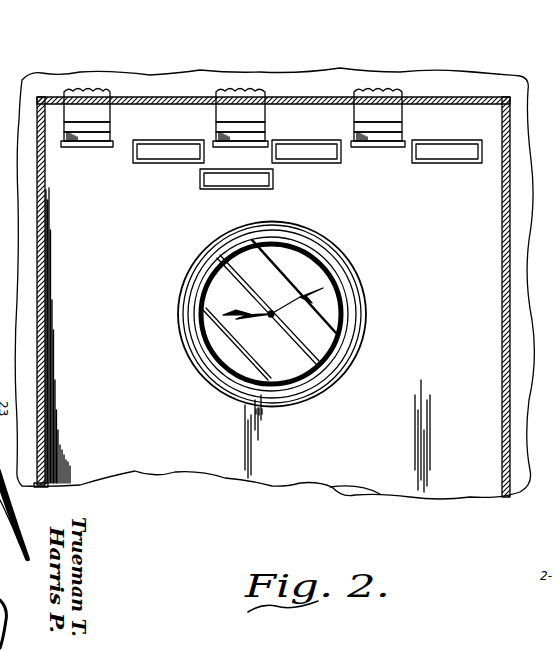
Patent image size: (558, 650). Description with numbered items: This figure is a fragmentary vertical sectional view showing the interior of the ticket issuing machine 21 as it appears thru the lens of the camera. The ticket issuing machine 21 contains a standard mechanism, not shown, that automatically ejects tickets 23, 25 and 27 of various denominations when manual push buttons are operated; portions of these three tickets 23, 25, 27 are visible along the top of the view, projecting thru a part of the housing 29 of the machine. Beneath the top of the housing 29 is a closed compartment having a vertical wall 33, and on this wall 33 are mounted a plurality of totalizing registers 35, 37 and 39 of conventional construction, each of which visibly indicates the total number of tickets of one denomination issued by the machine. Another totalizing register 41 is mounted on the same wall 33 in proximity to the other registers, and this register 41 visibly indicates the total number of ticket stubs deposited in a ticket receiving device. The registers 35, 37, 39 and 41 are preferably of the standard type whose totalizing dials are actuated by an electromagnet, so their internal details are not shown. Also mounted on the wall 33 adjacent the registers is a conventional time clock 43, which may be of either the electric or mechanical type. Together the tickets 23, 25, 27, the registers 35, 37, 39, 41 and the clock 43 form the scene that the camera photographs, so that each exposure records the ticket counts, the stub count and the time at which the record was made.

The ticket issuing machine 21 is at (230, 458).
The ticket 23 is at (87, 100).
The ticket 25 is at (247, 98).
The ticket 27 is at (388, 96).
The housing 29 is at (499, 396).
The vertical wall 33 is at (391, 486).
The totalizing register 35 is at (158, 164).
The totalizing register 37 is at (327, 164).
The totalizing register 39 is at (443, 164).
The totalizing register 41 is at (226, 190).
The time clock 43 is at (360, 329).